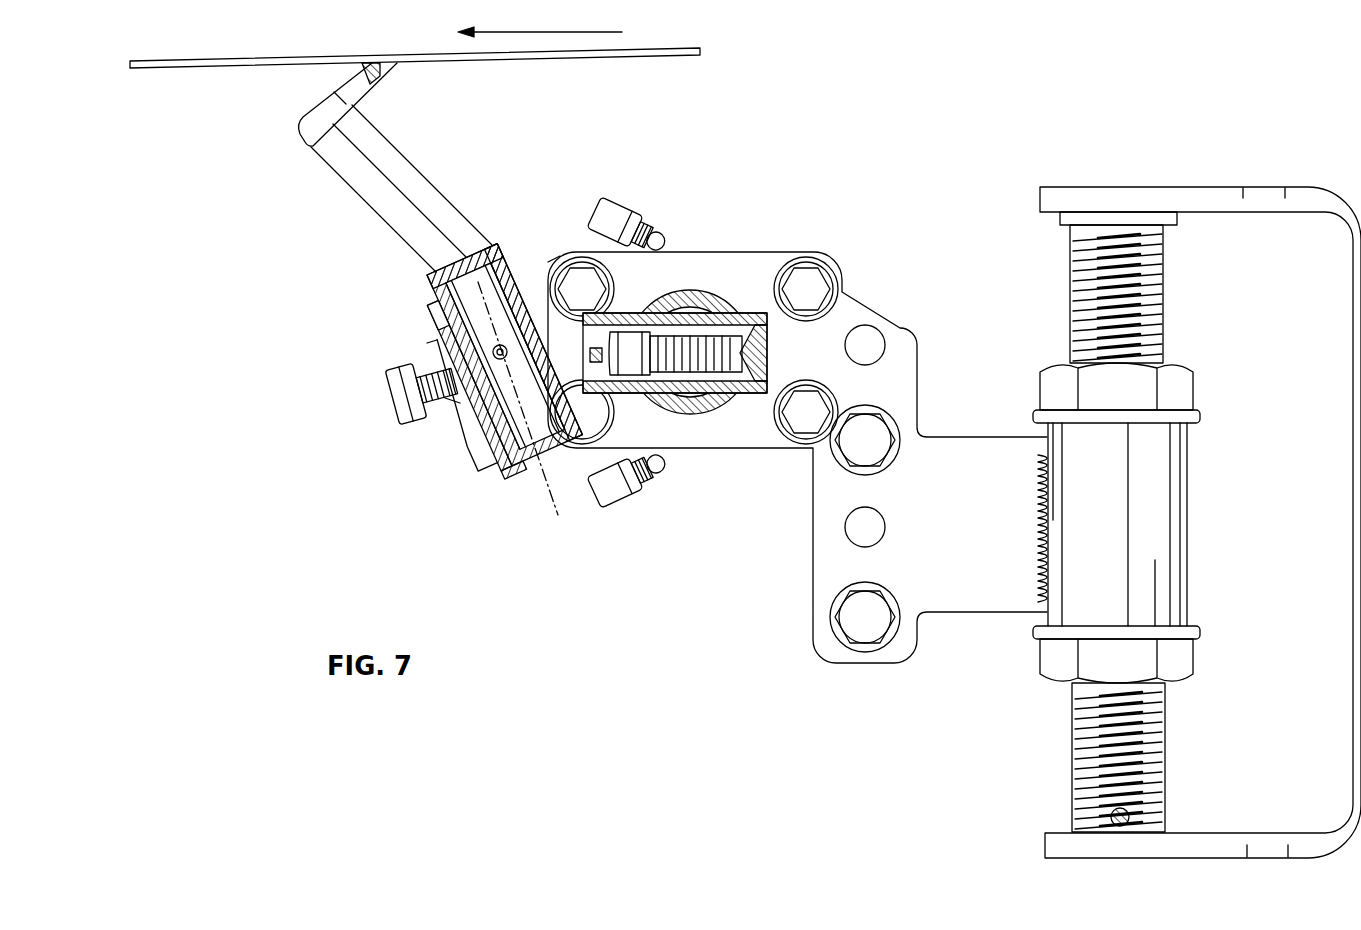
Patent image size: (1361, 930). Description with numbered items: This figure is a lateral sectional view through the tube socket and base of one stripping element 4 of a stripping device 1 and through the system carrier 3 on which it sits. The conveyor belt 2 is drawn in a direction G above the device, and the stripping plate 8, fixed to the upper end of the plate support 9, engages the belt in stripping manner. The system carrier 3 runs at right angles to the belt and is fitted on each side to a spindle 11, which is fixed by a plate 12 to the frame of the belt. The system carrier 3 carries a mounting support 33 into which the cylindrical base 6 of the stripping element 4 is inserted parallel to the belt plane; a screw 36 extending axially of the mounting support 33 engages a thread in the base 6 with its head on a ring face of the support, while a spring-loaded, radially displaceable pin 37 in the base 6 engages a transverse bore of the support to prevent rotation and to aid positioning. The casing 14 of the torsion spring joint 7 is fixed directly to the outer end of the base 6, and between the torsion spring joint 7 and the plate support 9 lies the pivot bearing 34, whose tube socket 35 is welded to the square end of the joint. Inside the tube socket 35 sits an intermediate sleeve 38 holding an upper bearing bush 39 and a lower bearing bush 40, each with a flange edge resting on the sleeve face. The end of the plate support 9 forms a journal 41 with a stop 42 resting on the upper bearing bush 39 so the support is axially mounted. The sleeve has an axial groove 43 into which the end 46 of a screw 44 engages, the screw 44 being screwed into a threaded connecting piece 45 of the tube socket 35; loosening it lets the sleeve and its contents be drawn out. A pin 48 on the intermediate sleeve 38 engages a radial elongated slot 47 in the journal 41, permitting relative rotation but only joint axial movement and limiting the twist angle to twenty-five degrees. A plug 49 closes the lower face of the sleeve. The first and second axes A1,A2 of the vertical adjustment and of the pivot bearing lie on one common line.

The stripping device 1 is at (668, 590).
The conveyor belt 2 is at (670, 52).
The system carrier 3 is at (694, 353).
The stripping element 4 is at (348, 180).
The base 6 is at (606, 378).
The torsion spring joint 7 is at (590, 250).
The stripping plate 8 is at (386, 66).
The plate support 9 is at (330, 146).
The spindle 11 is at (1140, 262).
The plate 12 is at (1345, 205).
The casing 14 is at (655, 262).
The mounting support 33 is at (675, 307).
The pivot bearing 34 is at (460, 353).
The tube socket 35 is at (468, 448).
The screw 36 is at (786, 300).
The pin 37 is at (683, 414).
The intermediate sleeve 38 is at (430, 302).
The upper bearing bush 39 is at (549, 262).
The lower bearing bush 40 is at (506, 452).
The journal 41 is at (458, 403).
The stop 42 is at (428, 272).
The groove 43 is at (464, 393).
The screw 44 is at (395, 426).
The connecting piece 45 is at (426, 343).
The end 46 is at (465, 258).
The elongated slot 47 is at (490, 255).
The pin 48 is at (498, 246).
The plug 49 is at (512, 462).
The first and second axes A1,A2 is at (562, 518).
The direction G is at (633, 19).